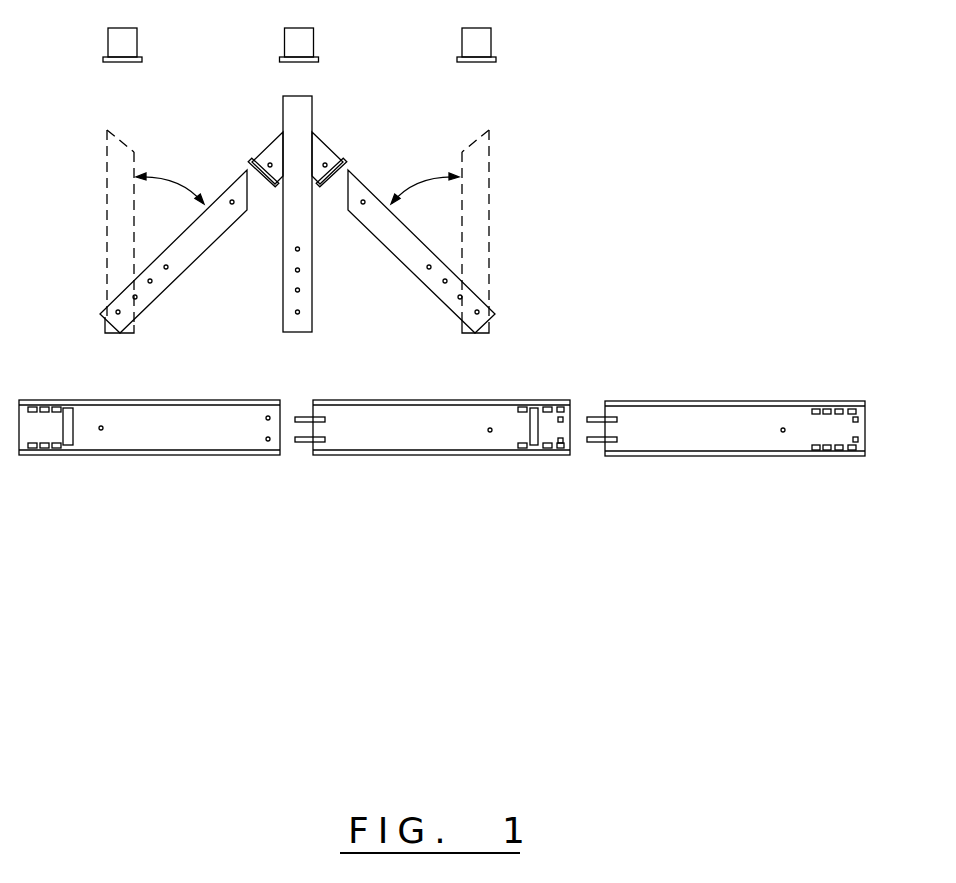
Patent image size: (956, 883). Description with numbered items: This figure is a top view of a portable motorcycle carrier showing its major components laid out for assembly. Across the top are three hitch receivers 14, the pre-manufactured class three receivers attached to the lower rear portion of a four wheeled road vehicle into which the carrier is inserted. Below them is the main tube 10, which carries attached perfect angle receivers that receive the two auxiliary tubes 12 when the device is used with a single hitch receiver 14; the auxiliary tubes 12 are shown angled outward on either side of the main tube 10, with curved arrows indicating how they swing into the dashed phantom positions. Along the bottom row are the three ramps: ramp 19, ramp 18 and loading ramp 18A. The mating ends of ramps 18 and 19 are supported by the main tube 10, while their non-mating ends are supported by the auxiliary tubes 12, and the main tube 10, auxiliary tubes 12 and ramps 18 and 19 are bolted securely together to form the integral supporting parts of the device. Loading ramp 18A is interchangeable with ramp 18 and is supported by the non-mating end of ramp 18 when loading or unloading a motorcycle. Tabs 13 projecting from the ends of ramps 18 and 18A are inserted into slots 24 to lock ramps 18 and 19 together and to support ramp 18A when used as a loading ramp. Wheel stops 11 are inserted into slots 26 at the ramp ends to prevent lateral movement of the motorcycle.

The main tube 10 is at (320, 141).
The wheel stop 11 is at (62, 432).
The auxiliary tube 12 is at (134, 245).
The tab 13 is at (303, 416).
The hitch receiver 14 is at (137, 42).
The ramp 18 is at (375, 455).
The loading ramp 18A is at (735, 457).
The ramp 19 is at (148, 455).
The slot 24 is at (268, 443).
The slot 26 is at (31, 448).